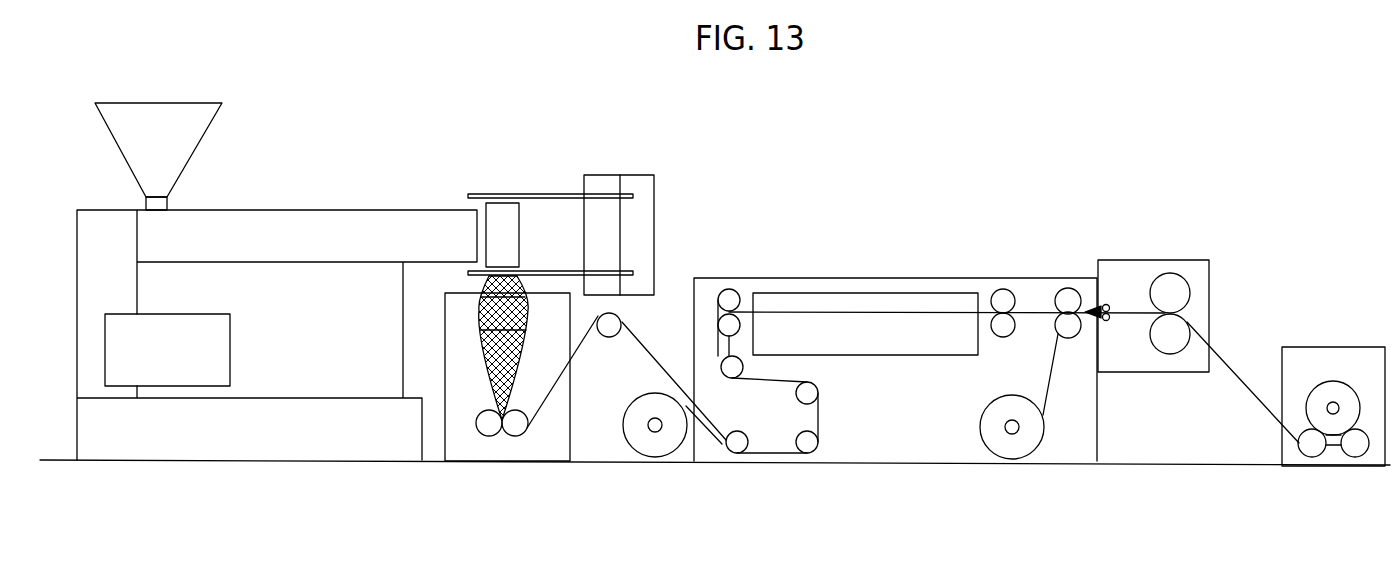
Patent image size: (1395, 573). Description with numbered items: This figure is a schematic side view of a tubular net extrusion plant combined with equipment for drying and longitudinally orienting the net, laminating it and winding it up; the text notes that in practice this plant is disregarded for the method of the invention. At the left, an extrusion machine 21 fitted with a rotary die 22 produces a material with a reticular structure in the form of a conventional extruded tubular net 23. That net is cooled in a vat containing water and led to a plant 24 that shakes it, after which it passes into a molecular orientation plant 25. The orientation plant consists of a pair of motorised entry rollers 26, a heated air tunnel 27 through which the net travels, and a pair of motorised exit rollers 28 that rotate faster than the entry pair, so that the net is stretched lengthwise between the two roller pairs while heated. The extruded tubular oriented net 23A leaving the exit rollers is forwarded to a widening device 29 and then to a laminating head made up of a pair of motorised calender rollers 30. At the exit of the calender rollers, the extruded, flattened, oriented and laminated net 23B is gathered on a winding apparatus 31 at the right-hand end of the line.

The extrusion machine 21 is at (346, 348).
The rotary die 22 is at (503, 227).
The extruded tubular net 23 is at (717, 342).
The shaking plant 24 is at (768, 435).
The molecular orientation plant 25 is at (862, 292).
The motorised entry rollers 26 is at (733, 287).
The heated air tunnel 27 is at (928, 333).
The motorised exit rollers 28 is at (1003, 298).
The extruded tubular oriented net 23A is at (1035, 305).
The widening device 29 is at (1105, 320).
The motorised calender rollers 30 is at (1170, 282).
The extruded, flattened, oriented and laminated net 23B is at (1225, 357).
The winding apparatus 31 is at (1352, 363).